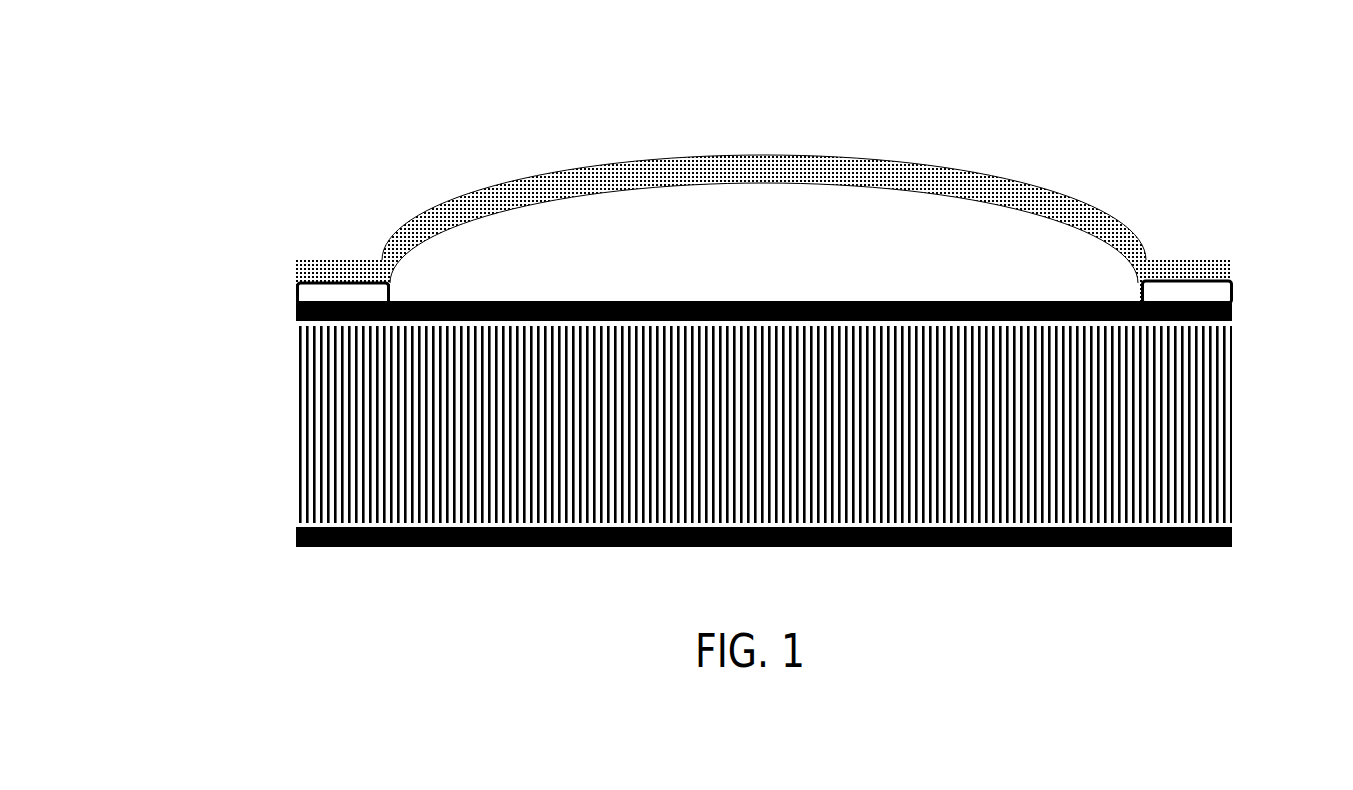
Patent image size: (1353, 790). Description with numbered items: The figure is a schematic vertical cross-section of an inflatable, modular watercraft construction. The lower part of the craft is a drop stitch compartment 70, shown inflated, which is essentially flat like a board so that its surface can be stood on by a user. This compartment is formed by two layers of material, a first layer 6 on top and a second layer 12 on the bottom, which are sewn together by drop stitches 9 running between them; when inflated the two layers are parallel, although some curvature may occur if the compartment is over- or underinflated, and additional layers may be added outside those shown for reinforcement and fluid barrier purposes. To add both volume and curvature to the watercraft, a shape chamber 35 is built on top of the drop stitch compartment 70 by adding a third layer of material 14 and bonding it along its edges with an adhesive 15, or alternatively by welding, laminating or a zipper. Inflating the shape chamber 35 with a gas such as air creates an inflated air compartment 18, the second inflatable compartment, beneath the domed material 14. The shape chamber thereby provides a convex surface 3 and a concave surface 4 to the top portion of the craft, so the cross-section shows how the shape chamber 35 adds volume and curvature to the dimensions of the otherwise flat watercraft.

The convex surface 3 is at (865, 165).
The concave surface 4 is at (860, 185).
The first layer 6 is at (1232, 305).
The drop stitches 9 is at (928, 440).
The second layer 12 is at (1083, 545).
The material (third layer) 14 is at (600, 183).
The adhesive 15 is at (345, 288).
The inflated air compartment 18 is at (923, 252).
The shape chamber 35 is at (764, 169).
The drop stitch compartment 70 is at (744, 431).